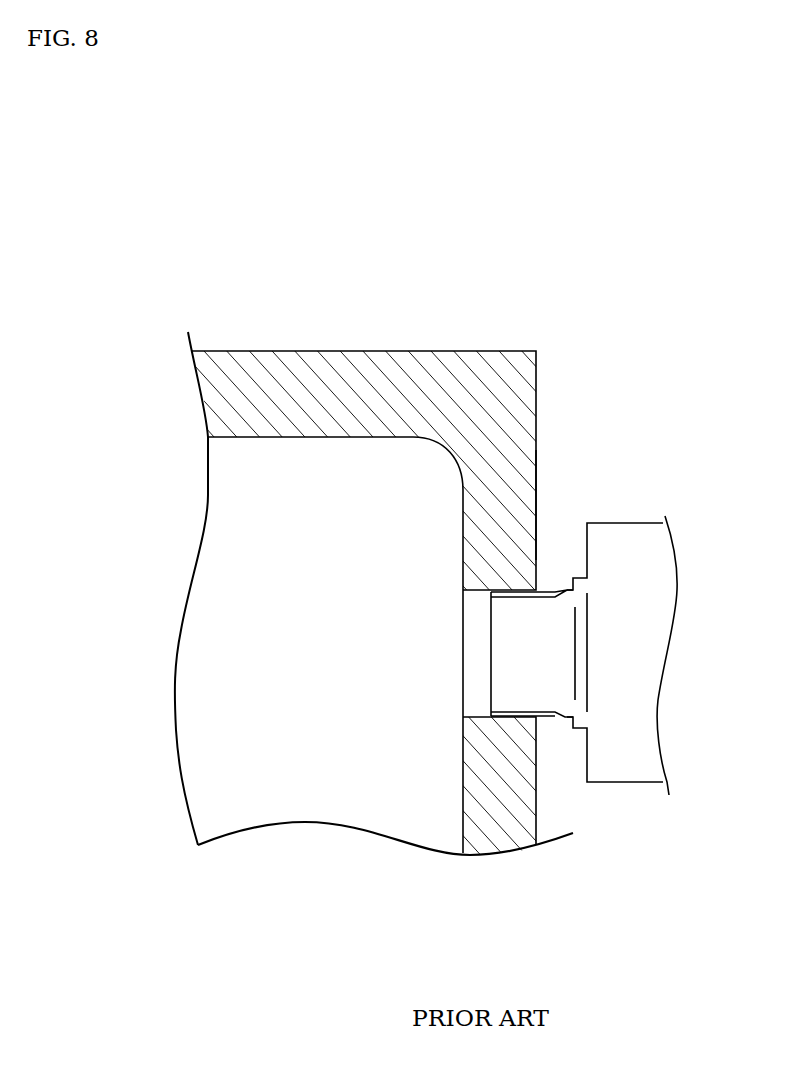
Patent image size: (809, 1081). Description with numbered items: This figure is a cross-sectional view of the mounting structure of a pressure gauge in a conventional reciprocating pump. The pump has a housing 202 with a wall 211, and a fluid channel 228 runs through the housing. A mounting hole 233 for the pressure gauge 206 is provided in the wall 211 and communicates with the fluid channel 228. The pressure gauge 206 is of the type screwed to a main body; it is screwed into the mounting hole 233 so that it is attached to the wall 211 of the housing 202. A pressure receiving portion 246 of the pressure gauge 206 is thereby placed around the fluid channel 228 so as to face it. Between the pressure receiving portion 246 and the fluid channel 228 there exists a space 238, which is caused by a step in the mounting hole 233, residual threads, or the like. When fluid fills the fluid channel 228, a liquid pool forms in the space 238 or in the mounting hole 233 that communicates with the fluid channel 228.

The housing 202 is at (416, 348).
The wall 211 is at (537, 512).
The fluid channel 228 is at (298, 648).
The space 238 is at (461, 624).
The pressure receiving portion 246 is at (490, 650).
The mounting hole 233 is at (511, 711).
The pressure gauge 206 is at (632, 792).